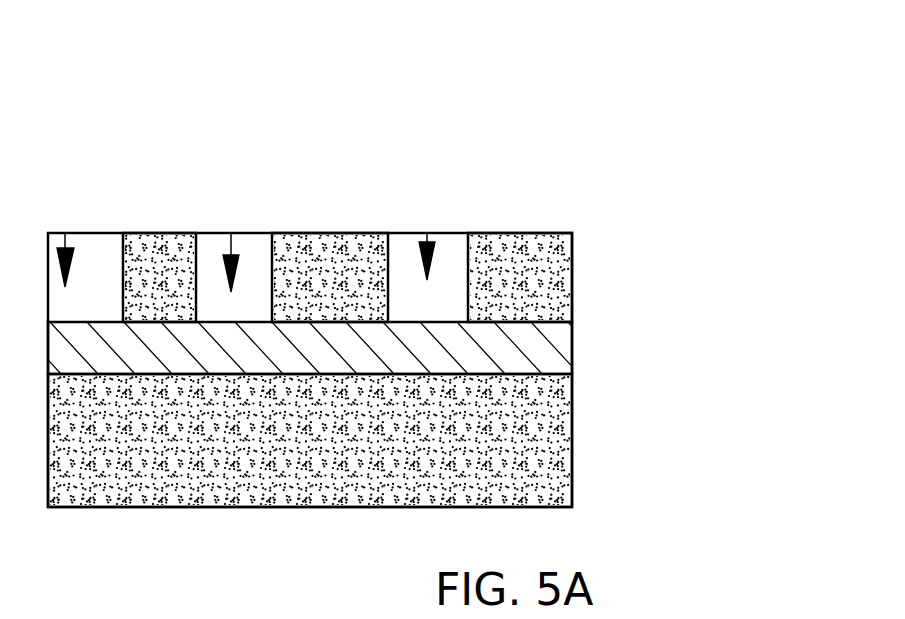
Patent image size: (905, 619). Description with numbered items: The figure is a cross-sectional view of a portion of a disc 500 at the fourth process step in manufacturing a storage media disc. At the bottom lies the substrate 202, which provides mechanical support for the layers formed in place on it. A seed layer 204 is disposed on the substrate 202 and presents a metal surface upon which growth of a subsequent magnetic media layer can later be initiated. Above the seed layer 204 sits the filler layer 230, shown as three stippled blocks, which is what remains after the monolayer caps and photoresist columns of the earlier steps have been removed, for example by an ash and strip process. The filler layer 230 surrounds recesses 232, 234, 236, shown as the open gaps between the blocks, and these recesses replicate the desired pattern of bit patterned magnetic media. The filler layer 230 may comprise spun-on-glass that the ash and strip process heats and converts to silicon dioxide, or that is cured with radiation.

The disc 500 is at (390, 70).
The substrate 202 is at (572, 437).
The seed layer 204 is at (572, 345).
The filler layer 230 is at (135, 233).
The recess 232 is at (427, 233).
The recess 234 is at (231, 233).
The recess 236 is at (65, 233).